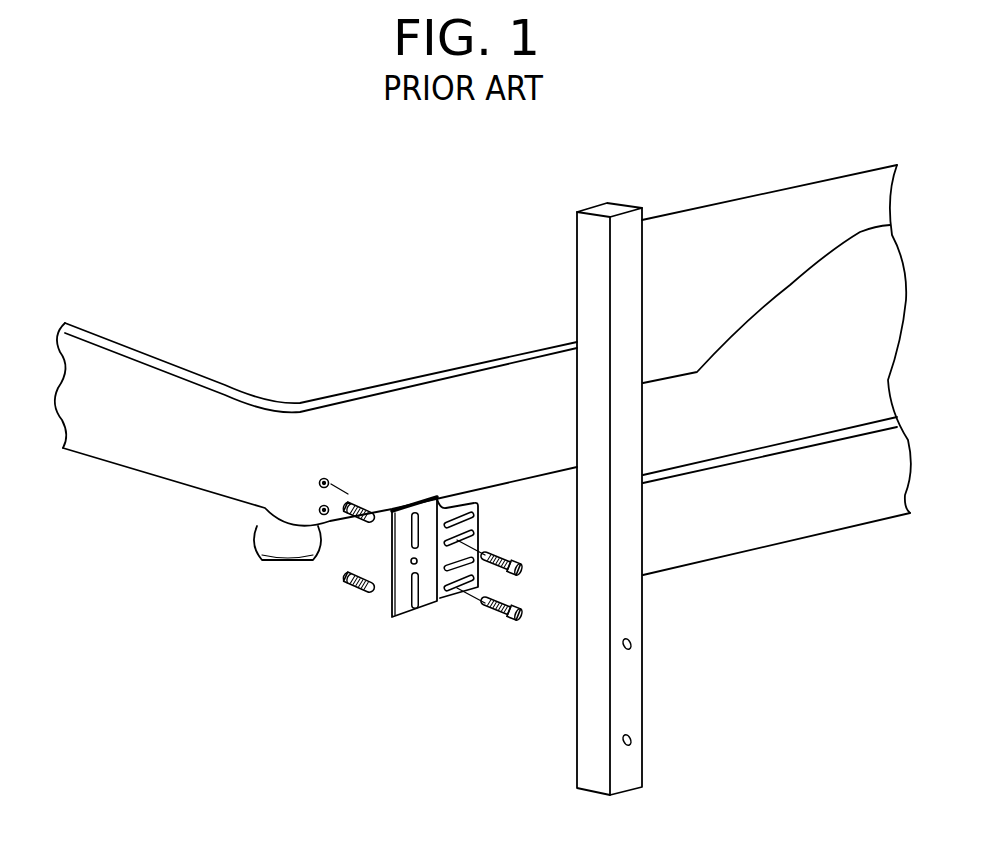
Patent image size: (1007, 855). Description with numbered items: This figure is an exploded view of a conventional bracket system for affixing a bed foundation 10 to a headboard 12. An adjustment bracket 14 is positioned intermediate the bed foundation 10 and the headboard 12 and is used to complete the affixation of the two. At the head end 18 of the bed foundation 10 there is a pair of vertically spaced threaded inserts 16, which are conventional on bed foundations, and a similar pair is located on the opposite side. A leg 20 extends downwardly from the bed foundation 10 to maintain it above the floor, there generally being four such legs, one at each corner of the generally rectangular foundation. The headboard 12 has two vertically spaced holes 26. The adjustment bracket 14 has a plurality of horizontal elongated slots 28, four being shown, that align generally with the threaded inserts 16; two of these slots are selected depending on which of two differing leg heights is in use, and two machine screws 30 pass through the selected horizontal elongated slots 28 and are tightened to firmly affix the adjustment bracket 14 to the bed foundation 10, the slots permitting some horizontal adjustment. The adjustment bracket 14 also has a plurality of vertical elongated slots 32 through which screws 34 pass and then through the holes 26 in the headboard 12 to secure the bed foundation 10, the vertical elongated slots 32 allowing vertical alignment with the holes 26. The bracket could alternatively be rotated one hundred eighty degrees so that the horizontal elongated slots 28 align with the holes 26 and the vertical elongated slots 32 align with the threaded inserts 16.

The bed foundation 10 is at (172, 510).
The headboard 12 is at (692, 545).
The adjustment bracket 14 is at (441, 601).
The threaded inserts 16 is at (318, 508).
The head end 18 is at (508, 397).
The leg 20 is at (267, 540).
The holes 26 is at (634, 646).
The horizontal elongated slots 28 is at (478, 517).
The machine screws 30 is at (518, 562).
The vertical elongated slots 32 is at (412, 540).
The screws 34 is at (365, 508).